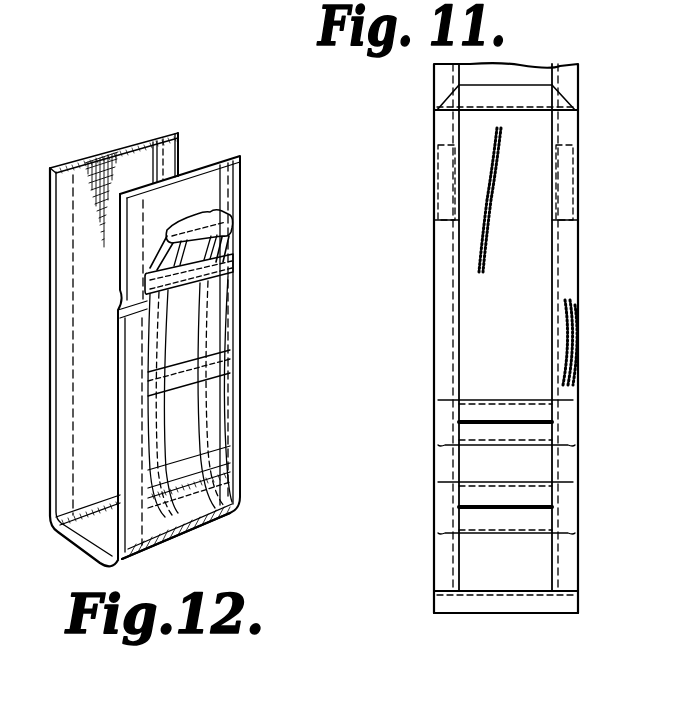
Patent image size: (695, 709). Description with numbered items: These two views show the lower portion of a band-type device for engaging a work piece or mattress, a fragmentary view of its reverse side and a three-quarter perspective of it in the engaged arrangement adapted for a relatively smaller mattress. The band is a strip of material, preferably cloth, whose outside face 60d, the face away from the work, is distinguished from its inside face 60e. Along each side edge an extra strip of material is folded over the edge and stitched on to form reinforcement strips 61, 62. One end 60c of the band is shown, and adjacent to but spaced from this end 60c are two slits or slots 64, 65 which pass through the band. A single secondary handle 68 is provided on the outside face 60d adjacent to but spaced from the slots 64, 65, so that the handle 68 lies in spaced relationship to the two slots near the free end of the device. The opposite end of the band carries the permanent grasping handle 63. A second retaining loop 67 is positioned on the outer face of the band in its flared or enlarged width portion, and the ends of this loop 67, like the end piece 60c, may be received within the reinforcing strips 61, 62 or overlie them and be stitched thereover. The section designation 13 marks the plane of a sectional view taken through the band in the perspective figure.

In FIG. 11, the reinforcement strip 61 is at (573, 245).
In FIG. 12, the reinforcement strip 61 is at (238, 189).
In FIG. 11, the reinforcement strip 62 is at (446, 283).
In FIG. 12, the reinforcement strip 62 is at (53, 372).
In FIG. 12, the handle 63 is at (190, 222).
In FIG. 11, the slot 64 is at (512, 506).
In FIG. 11, the slot 65 is at (510, 422).
In FIG. 12, the slot 65 is at (187, 497).
In FIG. 12, the second retaining loop 67 is at (216, 262).
In FIG. 11, the secondary handle 68 is at (537, 100).
In FIG. 11, the end 60c is at (530, 614).
In FIG. 12, the end 60c is at (238, 267).
In FIG. 11, the outside face 60d is at (470, 337).
In FIG. 12, the inside face 60e is at (128, 168).
In FIG. 12, the section line 13- 13 is at (153, 103).